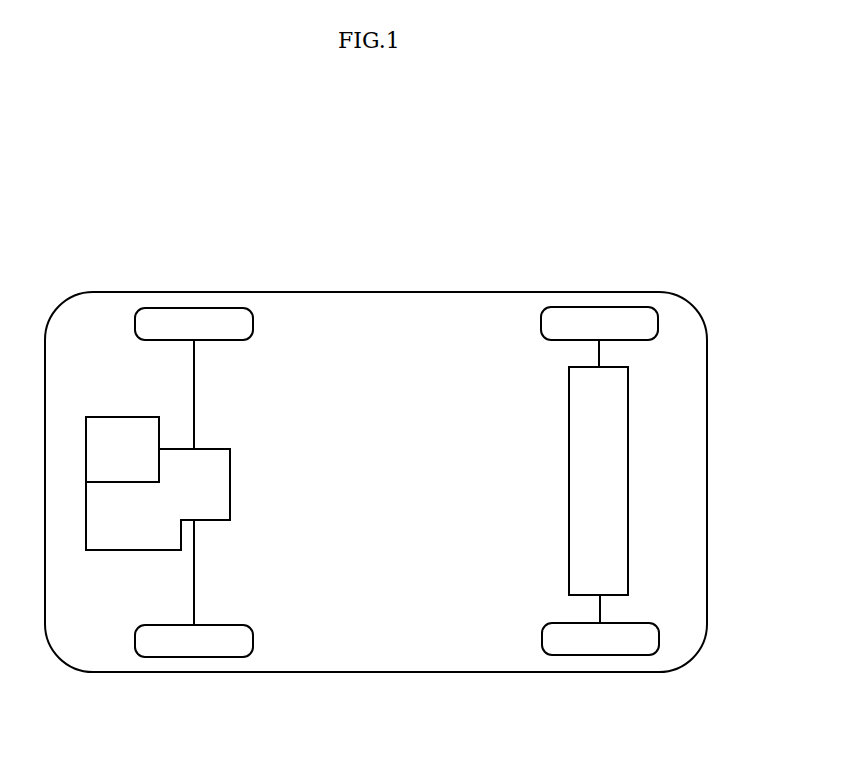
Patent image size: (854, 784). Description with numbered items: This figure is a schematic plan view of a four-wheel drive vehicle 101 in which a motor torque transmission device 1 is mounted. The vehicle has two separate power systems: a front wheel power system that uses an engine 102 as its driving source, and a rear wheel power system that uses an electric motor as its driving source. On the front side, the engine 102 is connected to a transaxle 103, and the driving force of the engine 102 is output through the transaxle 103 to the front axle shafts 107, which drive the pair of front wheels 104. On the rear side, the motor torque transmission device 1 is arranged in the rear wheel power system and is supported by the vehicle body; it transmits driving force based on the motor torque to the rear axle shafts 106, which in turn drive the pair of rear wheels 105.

The motor torque transmission device 1 is at (557, 513).
The four-wheel drive vehicle 101 is at (707, 371).
The engine 102 is at (122, 417).
The transaxle 103 is at (122, 550).
The front wheels 104 is at (193, 308).
The rear wheels 105 is at (597, 307).
The rear axle shafts 106 is at (600, 348).
The front axle shafts 107 is at (195, 402).